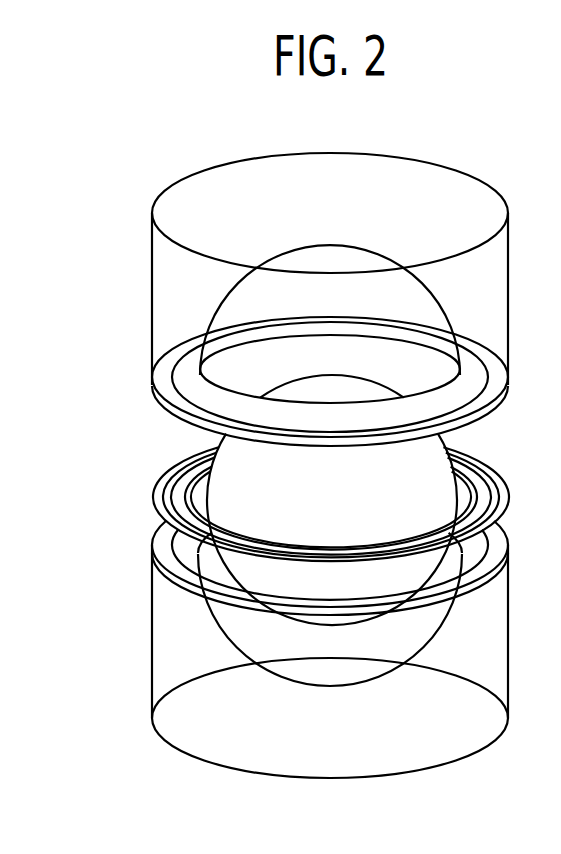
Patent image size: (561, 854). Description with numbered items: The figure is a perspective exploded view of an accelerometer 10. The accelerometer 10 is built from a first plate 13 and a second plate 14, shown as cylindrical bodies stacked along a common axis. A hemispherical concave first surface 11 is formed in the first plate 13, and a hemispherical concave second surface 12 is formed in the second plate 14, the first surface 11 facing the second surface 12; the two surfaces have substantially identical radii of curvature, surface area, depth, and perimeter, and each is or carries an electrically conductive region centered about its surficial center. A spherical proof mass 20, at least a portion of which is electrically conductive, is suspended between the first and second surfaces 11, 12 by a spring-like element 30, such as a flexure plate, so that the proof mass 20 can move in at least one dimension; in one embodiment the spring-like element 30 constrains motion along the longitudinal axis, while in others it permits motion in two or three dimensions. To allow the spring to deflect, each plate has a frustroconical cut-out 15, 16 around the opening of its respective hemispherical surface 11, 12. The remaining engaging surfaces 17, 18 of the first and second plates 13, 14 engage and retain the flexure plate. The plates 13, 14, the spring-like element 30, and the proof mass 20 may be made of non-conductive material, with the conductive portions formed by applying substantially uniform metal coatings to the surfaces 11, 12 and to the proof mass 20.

The accelerometer 10 is at (64, 157).
The first surface 11 is at (227, 293).
The second surface 12 is at (237, 633).
The first plate 13 is at (212, 183).
The second plate 14 is at (187, 720).
The frustroconical cut-out 15 is at (190, 372).
The frustroconical cut-out 16 is at (188, 560).
The engaging surface 17 is at (152, 373).
The engaging surface 18 is at (152, 548).
The proof mass 20 is at (227, 465).
The spring-like element 30 is at (152, 495).